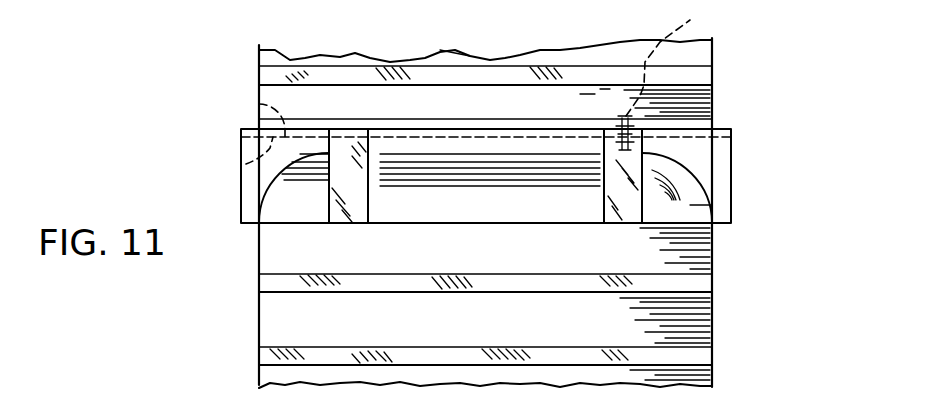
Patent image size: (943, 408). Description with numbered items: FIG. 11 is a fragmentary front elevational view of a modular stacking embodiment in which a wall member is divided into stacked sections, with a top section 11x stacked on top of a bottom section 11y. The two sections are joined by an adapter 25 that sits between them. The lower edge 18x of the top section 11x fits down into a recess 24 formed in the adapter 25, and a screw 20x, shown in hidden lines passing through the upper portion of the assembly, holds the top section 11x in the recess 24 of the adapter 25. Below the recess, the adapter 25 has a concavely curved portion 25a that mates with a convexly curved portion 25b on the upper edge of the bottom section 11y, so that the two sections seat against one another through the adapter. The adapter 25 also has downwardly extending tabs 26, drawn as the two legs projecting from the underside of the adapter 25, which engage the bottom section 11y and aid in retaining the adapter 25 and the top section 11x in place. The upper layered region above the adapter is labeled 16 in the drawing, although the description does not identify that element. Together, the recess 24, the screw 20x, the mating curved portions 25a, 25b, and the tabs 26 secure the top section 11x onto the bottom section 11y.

The semiconductor substrate 16 is at (463, 28).
The screw 20x is at (667, 75).
The recess 24 is at (258, 101).
The lower edge 18x is at (246, 164).
The top section 11x is at (712, 108).
The bottom section 11y is at (712, 308).
The adapter 25 is at (731, 132).
The concavely curved portion 25a is at (700, 178).
The convexly curved portion 25b is at (705, 208).
The downwardly extending tabs 26 is at (352, 225).